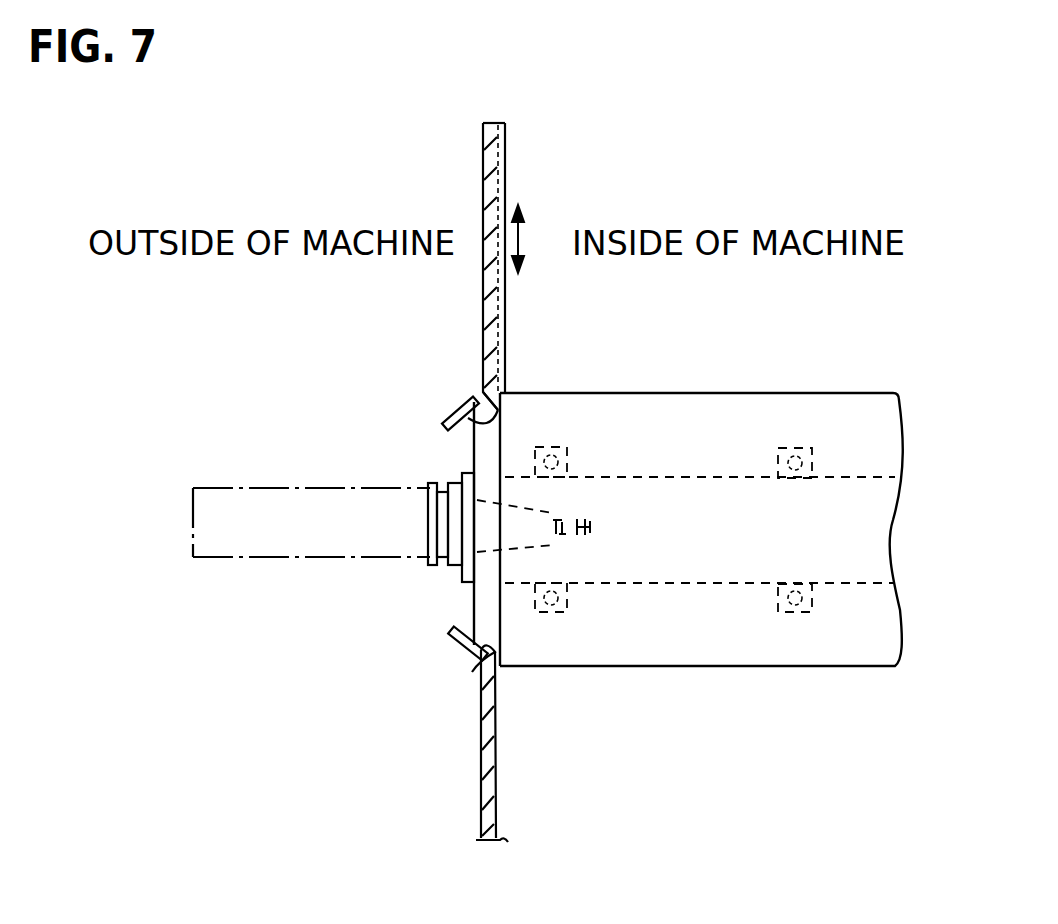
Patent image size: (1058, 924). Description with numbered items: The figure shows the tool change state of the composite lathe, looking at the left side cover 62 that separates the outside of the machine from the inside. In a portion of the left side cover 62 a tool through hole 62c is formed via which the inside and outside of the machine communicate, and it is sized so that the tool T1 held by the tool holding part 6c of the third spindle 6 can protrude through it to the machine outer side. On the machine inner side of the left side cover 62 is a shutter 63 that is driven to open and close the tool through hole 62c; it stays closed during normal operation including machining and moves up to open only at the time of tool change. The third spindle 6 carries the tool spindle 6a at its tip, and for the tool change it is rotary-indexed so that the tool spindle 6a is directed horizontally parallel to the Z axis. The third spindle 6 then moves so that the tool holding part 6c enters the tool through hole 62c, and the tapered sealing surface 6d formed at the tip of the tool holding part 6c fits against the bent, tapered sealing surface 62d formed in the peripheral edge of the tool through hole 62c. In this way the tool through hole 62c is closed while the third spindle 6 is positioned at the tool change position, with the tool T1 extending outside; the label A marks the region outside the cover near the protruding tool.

The third spindle 6 is at (797, 393).
The tool spindle 6a is at (670, 477).
The tool holding part 6c is at (585, 393).
The sealing surface 6d is at (468, 406).
The left side cover 62 is at (482, 180).
The tool through hole 62c is at (465, 652).
The sealing surface 62d is at (512, 405).
The shutter 63 is at (501, 170).
The tool T1 is at (313, 488).
The gap region A is at (422, 598).